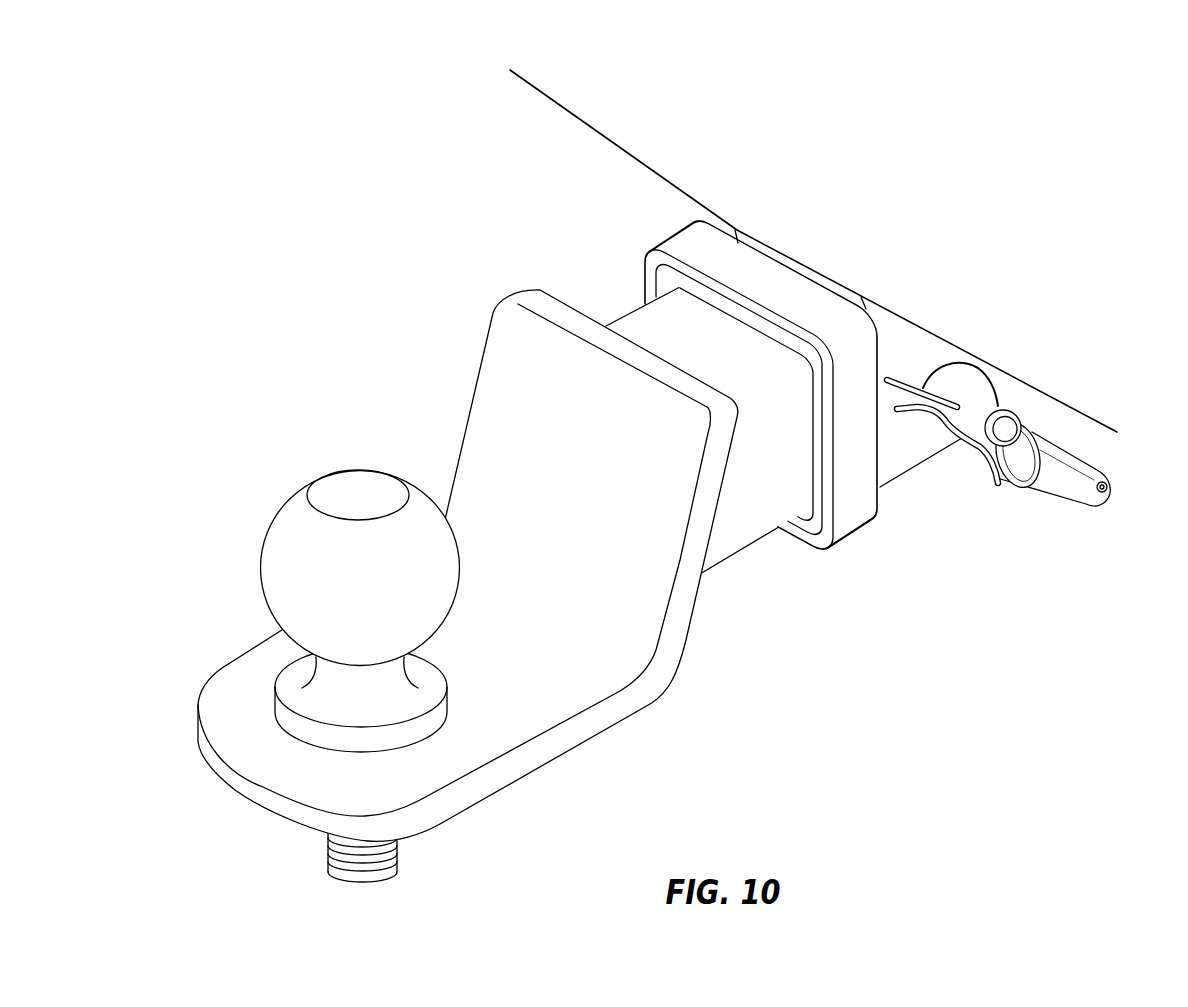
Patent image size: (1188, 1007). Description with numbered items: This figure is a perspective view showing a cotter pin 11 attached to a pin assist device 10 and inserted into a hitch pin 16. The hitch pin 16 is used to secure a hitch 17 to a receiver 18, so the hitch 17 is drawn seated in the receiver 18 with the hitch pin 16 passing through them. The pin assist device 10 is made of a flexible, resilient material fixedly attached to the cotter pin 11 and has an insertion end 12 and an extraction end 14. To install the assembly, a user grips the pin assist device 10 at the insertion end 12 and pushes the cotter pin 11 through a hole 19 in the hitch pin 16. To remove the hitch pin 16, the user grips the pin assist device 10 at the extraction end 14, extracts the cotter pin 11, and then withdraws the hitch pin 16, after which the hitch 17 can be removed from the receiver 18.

The pin assist device 10 is at (1060, 505).
The cotter pin 11 is at (910, 403).
The insertion end 12 is at (1032, 418).
The extraction end 14 is at (1113, 477).
The hitch pin 16 is at (978, 395).
The hitch 17 is at (477, 378).
The receiver 18 is at (672, 240).
The hole 19 is at (952, 398).